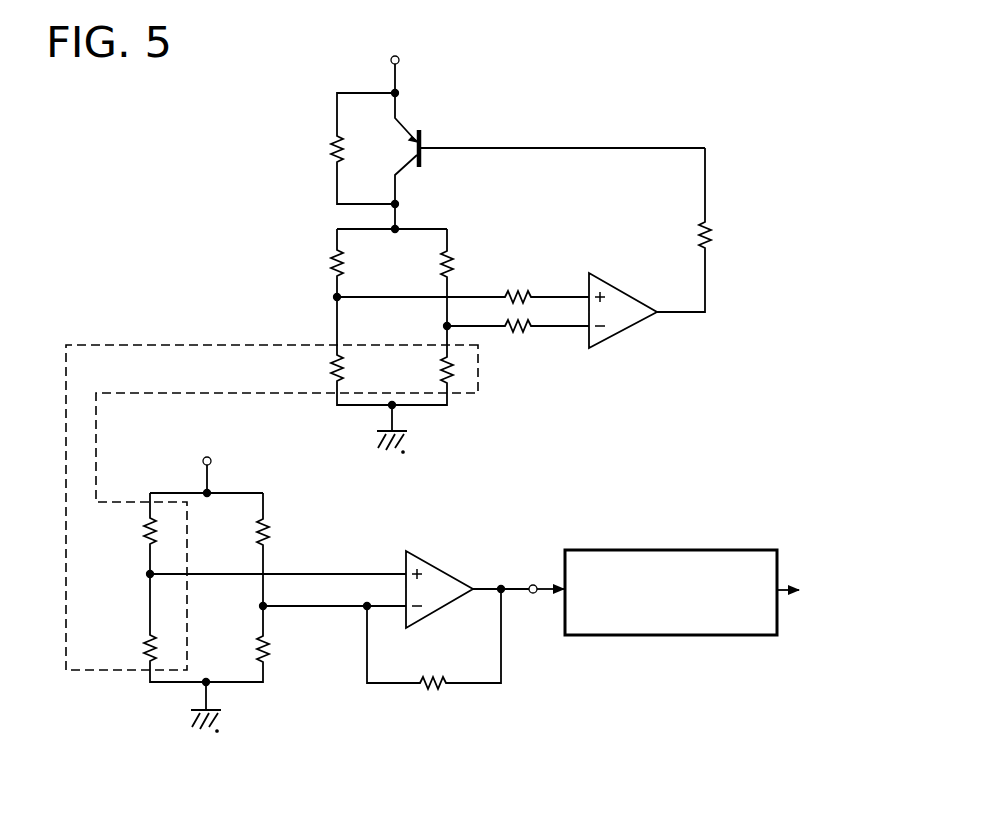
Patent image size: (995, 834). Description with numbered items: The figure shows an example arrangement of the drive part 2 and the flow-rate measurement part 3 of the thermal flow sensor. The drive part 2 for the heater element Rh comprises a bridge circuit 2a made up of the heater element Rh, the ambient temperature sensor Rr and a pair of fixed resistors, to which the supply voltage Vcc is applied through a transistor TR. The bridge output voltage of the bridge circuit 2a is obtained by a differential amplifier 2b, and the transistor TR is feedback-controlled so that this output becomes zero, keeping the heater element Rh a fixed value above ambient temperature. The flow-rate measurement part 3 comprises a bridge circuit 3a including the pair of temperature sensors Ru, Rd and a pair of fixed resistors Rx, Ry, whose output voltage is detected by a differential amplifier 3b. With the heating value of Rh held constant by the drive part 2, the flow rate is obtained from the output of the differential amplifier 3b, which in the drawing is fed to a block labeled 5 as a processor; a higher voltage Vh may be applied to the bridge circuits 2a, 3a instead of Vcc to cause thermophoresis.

The drive part 2 is at (579, 172).
The bridge circuit 2a is at (436, 241).
The differential amplifier 2b is at (621, 290).
The flow-rate measurement part 3 is at (373, 538).
The bridge circuit 3a is at (247, 504).
The differential amplifier 3b is at (446, 573).
The microprocessor 5 is at (742, 550).